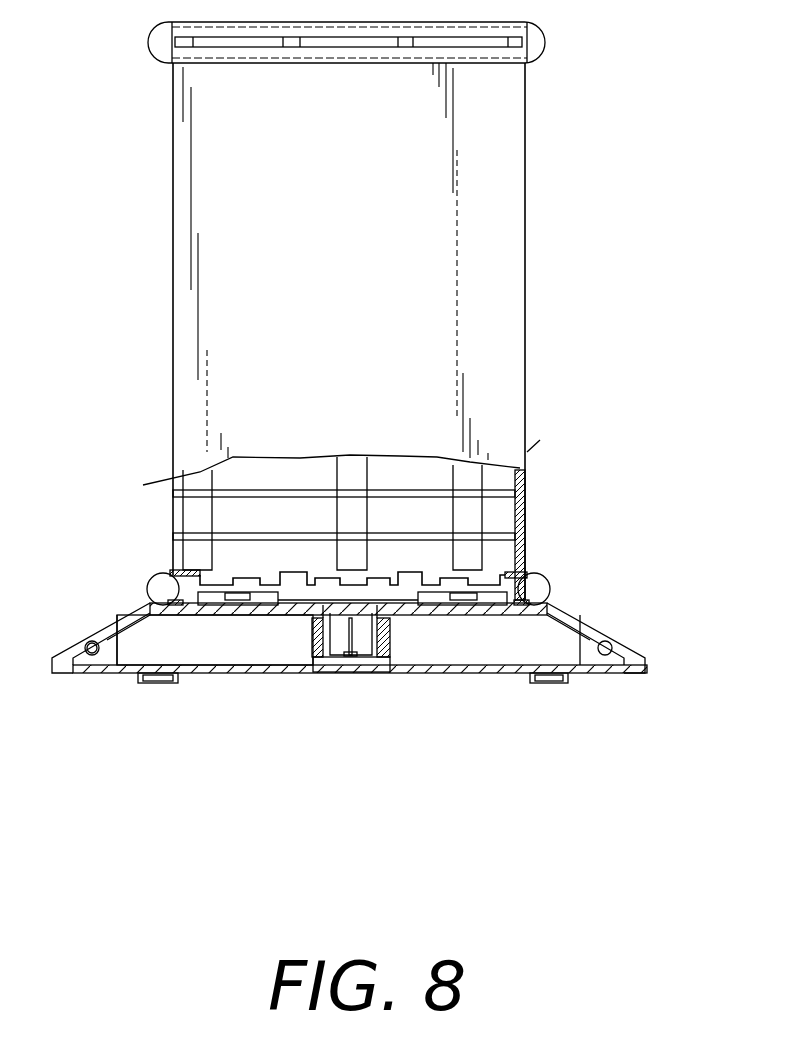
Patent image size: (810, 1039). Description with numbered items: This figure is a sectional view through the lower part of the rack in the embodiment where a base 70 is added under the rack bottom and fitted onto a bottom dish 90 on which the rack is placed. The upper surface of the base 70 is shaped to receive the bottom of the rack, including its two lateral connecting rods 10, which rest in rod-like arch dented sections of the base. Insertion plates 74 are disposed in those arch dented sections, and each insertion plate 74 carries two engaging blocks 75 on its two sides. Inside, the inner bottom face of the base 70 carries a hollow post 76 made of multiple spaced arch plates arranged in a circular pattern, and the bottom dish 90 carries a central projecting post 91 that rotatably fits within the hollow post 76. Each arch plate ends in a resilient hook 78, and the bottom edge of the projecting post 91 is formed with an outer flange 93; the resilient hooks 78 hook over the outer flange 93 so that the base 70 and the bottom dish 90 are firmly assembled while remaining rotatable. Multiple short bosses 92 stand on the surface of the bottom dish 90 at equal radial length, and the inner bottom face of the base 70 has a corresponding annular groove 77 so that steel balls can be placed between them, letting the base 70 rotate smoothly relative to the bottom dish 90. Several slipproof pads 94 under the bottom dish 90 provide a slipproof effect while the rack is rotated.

The connecting rod 10 is at (170, 570).
The base 70 is at (633, 650).
The insertion plate 74 is at (503, 595).
The engaging block 75 is at (470, 597).
The hollow post 76 is at (343, 657).
The annular groove 77 is at (103, 643).
The resilient hook 78 is at (395, 672).
The bottom dish 90 is at (477, 672).
The projecting post 91 is at (317, 635).
The short boss 92 is at (100, 657).
The outer flange 93 is at (387, 652).
The slipproof pad 94 is at (557, 682).